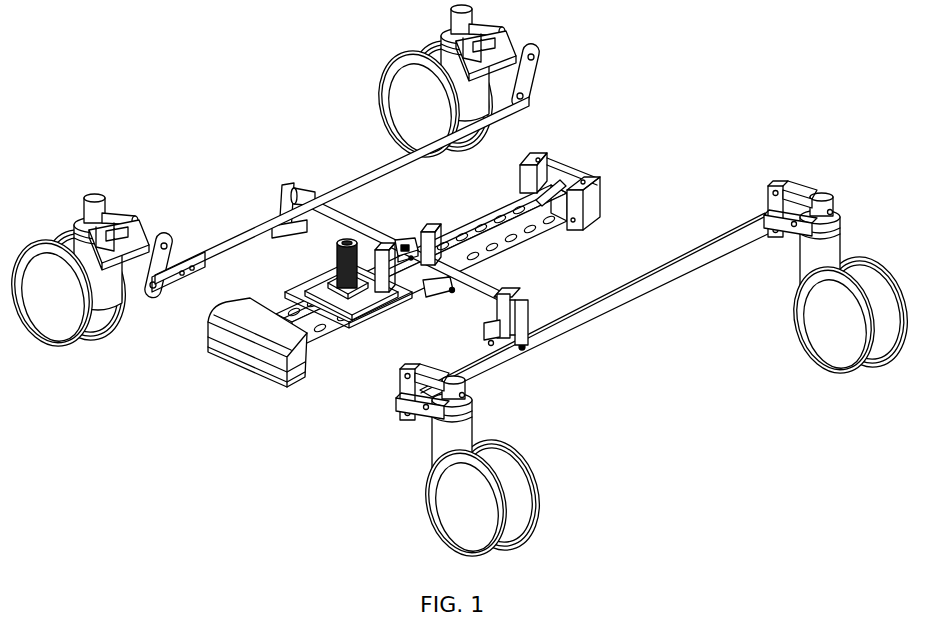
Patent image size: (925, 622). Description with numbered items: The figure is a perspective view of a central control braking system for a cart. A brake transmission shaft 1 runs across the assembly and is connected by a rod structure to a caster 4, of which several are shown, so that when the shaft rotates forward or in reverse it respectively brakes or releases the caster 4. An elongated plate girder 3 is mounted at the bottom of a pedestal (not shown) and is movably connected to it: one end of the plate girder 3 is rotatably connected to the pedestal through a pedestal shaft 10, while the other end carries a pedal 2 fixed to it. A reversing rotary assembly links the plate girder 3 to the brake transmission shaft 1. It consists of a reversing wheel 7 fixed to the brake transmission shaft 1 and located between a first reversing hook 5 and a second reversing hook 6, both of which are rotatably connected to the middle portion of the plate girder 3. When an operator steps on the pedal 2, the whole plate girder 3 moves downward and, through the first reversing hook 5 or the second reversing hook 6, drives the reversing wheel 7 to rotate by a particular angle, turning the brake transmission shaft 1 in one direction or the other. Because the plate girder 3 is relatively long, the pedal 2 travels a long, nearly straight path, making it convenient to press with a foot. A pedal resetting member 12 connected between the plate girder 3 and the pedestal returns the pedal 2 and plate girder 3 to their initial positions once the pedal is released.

The brake transmission shaft 1 is at (357, 222).
The pedal 2 is at (257, 342).
The plate girder 3 is at (520, 243).
The caster 4 is at (457, 507).
The first reversing hook 5 is at (388, 242).
The second reversing hook 6 is at (440, 230).
The reversing wheel 7 is at (404, 250).
The pedestal shaft 10 is at (543, 197).
The pedal resetting member 12 is at (337, 250).